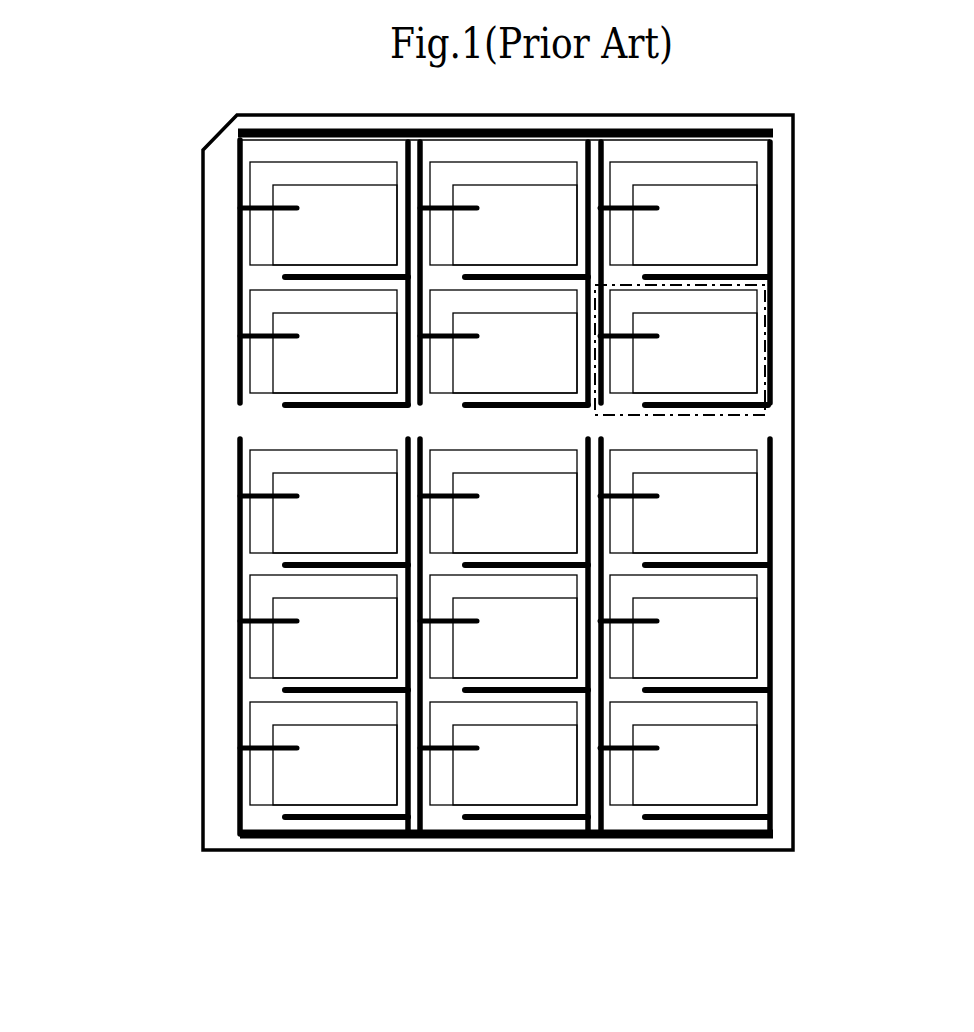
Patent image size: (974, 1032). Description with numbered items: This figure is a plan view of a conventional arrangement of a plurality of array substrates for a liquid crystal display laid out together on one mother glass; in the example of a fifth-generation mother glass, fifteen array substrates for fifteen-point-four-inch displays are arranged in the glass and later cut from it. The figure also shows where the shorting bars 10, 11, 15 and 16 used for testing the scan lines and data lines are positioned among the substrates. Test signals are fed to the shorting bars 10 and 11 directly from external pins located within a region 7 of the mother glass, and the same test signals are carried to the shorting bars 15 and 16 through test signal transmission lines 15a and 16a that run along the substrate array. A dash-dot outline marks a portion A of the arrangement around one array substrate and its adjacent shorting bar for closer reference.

The region 7 is at (363, 138).
The shorting bar 10 is at (500, 527).
The shorting bar 11 is at (605, 783).
The shorting bar 15 is at (586, 489).
The shorting bar 16 is at (720, 410).
The test signal transmission line 15a is at (866, 488).
The test signal transmission line 16a is at (773, 510).
The enlarged region A is at (768, 355).